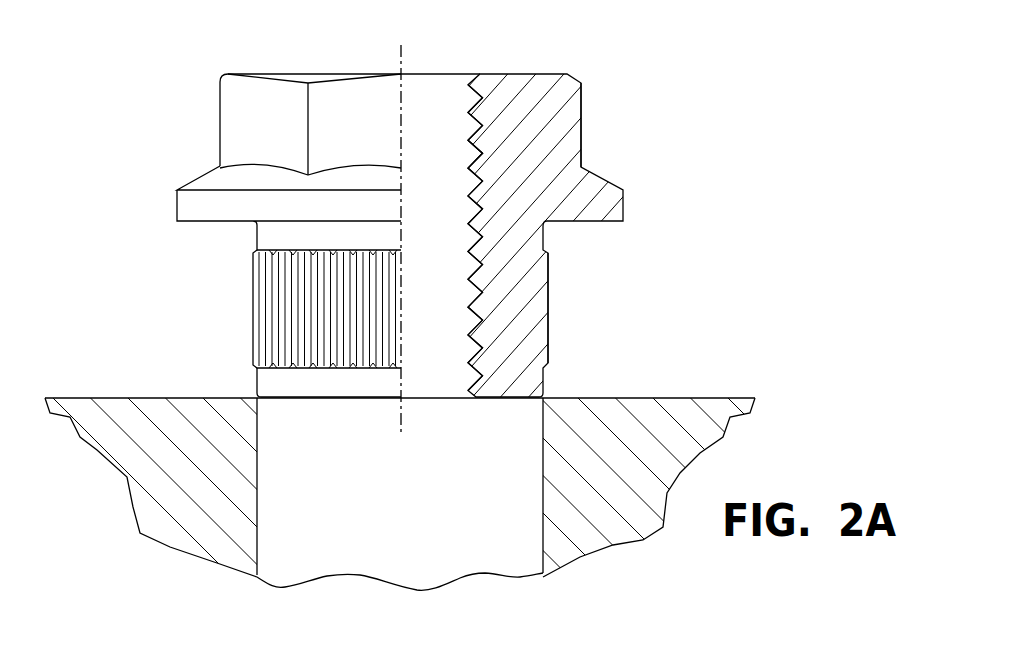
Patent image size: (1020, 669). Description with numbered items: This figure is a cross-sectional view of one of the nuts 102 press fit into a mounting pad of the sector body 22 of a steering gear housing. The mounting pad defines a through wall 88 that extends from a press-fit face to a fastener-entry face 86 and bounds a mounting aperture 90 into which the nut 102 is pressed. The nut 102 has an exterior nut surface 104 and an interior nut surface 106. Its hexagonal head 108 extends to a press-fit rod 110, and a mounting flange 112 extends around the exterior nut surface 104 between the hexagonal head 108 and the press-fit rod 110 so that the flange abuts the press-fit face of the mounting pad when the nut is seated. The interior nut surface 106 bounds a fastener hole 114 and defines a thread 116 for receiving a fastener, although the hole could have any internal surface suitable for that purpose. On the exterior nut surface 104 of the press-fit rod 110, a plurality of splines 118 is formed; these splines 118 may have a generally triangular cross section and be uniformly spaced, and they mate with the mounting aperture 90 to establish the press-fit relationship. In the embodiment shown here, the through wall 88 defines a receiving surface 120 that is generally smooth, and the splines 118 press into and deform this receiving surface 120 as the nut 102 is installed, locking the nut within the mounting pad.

The sector body 22 is at (693, 398).
The fastener-entry face 86 is at (188, 398).
The through wall 88 is at (257, 460).
The mounting aperture 90 is at (418, 476).
The nut 102 is at (592, 101).
The exterior nut surface 104 is at (582, 117).
The interior nut surface 106 is at (478, 258).
The hexagonal head 108 is at (233, 113).
The press-fit rod 110 is at (337, 386).
The mounting flange 112 is at (183, 205).
The fastener hole 114 is at (453, 320).
The thread 116 is at (474, 165).
The splines 118 is at (258, 315).
The receiving surface 120 is at (257, 533).